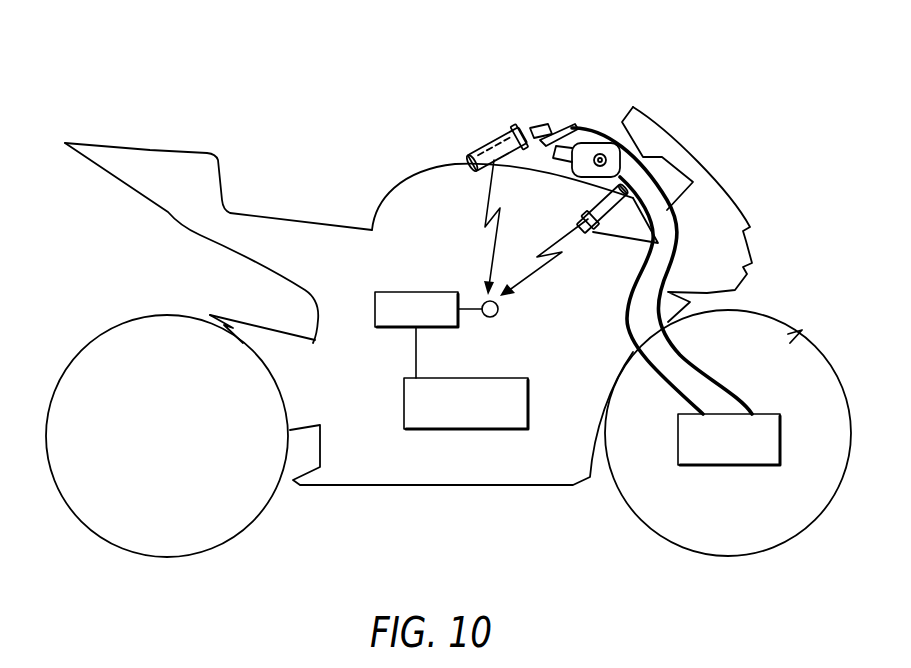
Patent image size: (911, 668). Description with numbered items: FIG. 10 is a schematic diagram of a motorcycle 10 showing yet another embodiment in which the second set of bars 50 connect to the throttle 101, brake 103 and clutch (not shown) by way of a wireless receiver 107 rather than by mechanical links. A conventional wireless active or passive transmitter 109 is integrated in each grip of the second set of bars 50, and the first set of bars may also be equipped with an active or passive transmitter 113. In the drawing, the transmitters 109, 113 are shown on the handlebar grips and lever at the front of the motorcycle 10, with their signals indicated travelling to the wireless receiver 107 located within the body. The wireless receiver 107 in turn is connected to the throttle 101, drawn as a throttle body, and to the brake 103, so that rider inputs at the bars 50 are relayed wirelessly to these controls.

The motorcycle 10 is at (742, 107).
The second set of bars 50 is at (522, 158).
The wireless active or passive transmitter 109 is at (480, 152).
The active or passive transmitter 113 is at (597, 228).
The wireless receiver 107 is at (398, 330).
The throttle 101 is at (465, 429).
The brake 103 is at (728, 465).